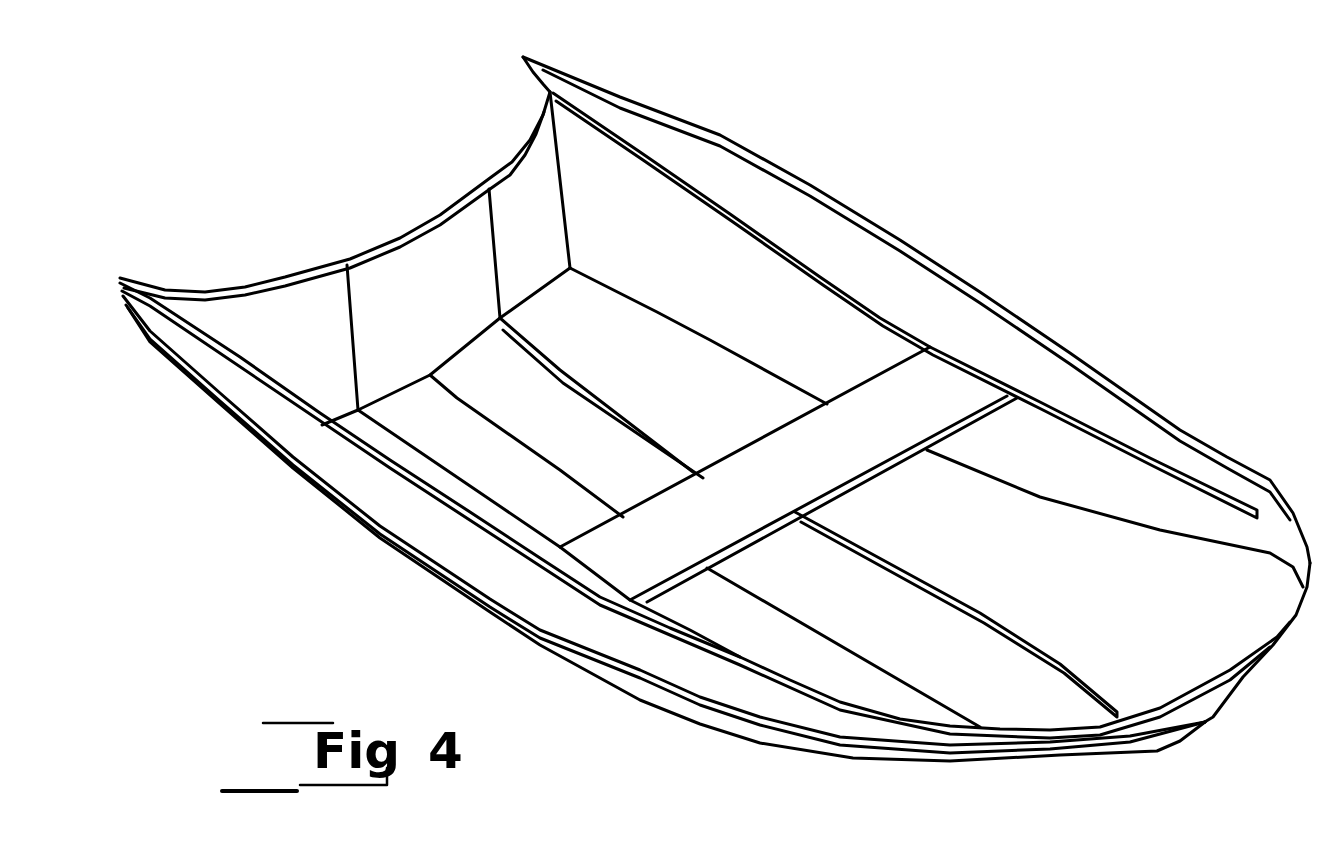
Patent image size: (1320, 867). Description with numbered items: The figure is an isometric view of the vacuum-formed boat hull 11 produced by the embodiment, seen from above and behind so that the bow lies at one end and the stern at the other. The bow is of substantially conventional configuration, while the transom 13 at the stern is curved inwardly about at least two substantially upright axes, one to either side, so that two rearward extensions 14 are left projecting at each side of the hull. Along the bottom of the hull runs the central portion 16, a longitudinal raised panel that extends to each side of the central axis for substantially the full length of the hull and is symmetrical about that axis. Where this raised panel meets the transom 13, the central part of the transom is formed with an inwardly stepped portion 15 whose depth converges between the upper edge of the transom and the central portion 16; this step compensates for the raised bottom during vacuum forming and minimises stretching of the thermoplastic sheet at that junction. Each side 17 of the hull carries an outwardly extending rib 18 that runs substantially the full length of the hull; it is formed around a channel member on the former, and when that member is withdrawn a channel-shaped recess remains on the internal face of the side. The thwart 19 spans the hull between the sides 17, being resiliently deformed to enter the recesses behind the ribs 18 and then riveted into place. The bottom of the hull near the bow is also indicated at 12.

The boat hull 11 is at (928, 190).
The bottom 12 is at (1157, 750).
The transom 13 is at (278, 278).
The rearward extensions 14 is at (150, 281).
The inwardly stepped portion 15 is at (372, 293).
The central portion 16 is at (927, 661).
The side 17 is at (922, 287).
The rib 18 is at (903, 327).
The thwart 19 is at (877, 461).